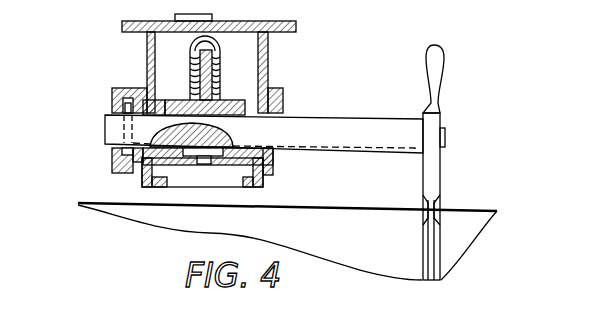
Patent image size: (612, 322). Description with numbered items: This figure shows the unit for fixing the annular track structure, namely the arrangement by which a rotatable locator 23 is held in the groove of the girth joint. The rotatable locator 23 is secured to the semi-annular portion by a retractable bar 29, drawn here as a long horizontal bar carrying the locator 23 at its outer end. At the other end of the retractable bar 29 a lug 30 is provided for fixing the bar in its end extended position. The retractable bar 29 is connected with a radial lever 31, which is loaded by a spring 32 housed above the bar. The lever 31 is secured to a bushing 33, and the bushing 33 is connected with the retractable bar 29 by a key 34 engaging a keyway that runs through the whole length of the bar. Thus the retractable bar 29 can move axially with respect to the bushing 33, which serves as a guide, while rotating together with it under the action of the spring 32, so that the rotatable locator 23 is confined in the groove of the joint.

The rotatable locator 23 is at (432, 170).
The retractable bar 29 is at (352, 128).
The lug 30 is at (130, 90).
The radial lever 31 is at (219, 68).
The spring 32 is at (198, 43).
The bushing 33 is at (142, 170).
The key 34 is at (214, 148).